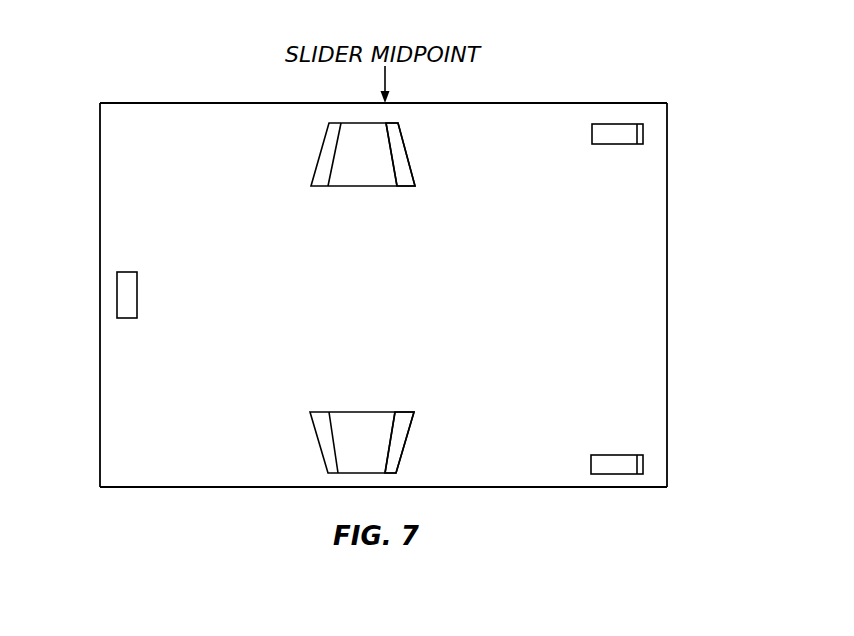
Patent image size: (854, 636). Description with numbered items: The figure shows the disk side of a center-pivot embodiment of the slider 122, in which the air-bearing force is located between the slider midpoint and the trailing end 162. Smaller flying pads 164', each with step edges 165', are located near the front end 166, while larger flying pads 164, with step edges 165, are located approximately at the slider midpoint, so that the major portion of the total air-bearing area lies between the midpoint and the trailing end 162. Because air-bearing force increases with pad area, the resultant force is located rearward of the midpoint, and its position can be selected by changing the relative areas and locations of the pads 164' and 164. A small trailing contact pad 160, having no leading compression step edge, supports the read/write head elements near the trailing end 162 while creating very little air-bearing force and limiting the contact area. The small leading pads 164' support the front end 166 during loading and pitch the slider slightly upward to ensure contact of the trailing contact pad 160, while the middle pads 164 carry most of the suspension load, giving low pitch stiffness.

The slider 122 is at (565, 102).
The trailing contact pad 160 is at (134, 272).
The trailing end 162 is at (100, 137).
The flying pads 164 is at (348, 298).
The step edges 165 is at (435, 298).
The flying pads 164' is at (589, 299).
The step edges 165' is at (686, 289).
The front end 166 is at (667, 297).